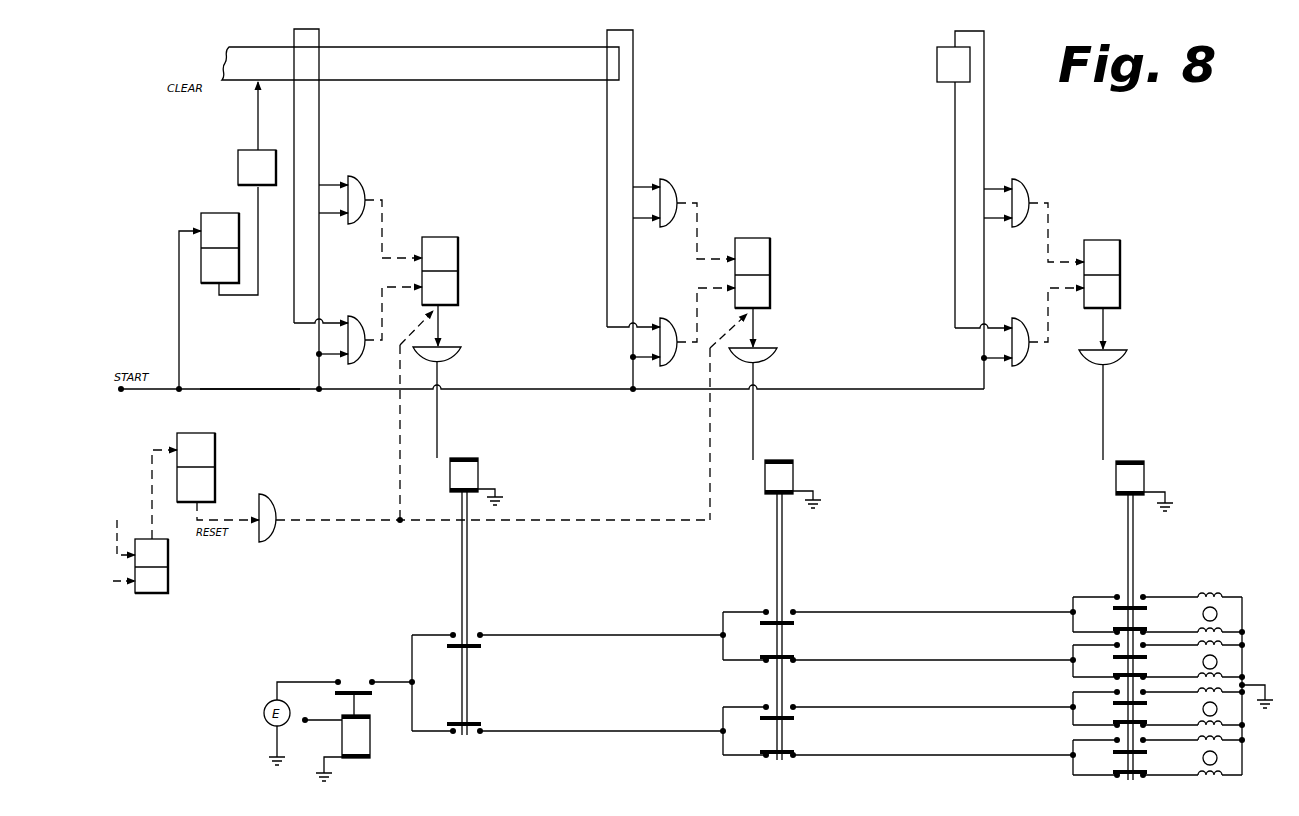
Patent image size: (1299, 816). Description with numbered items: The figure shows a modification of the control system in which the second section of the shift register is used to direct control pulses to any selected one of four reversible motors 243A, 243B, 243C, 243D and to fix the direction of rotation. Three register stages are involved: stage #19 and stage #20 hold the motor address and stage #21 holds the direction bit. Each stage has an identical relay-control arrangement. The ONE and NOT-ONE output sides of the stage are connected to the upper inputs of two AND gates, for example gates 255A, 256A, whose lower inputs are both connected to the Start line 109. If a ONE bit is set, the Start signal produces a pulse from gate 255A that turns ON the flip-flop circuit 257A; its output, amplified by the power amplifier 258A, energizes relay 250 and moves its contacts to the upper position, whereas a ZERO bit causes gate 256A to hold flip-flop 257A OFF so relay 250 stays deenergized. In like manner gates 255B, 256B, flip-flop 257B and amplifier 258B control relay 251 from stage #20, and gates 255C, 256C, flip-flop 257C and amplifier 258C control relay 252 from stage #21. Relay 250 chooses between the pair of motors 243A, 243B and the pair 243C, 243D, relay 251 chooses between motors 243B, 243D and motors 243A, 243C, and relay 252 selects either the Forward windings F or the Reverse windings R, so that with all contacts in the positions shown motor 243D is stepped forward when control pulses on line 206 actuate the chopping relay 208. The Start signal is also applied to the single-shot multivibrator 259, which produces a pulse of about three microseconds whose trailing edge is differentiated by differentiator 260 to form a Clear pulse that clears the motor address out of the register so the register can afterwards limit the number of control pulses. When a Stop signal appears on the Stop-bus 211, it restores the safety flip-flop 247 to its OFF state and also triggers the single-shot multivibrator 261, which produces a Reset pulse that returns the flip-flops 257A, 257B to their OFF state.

The stage #19 of the shift register 19 is at (301, 209).
The stage #20 of the shift register 20 is at (614, 209).
The stage #21 of the shift register 21 is at (960, 210).
The Start line 109 is at (274, 387).
The line 206 is at (330, 752).
The chopping relay 208 is at (370, 740).
The Stop-bus 211 is at (123, 522).
The reversible motor 243A is at (1175, 609).
The reversible motor 243B is at (1175, 660).
The reversible motor 243C is at (1176, 708).
The reversible motor 243D is at (1176, 757).
The flip-flop 247 is at (168, 555).
The relay 250 is at (478, 471).
The relay 251 is at (792, 471).
The relay 252 is at (1146, 471).
The AND gate 255A is at (355, 180).
The AND gate 255B is at (668, 180).
The AND gate 255C is at (1017, 180).
The AND gate 256A is at (358, 314).
The AND gate 256B is at (672, 316).
The AND gate 256C is at (1024, 316).
The flip-flop circuit 257A is at (460, 243).
The flip-flop circuit 257B is at (774, 243).
The flip-flop circuit 257C is at (1122, 247).
The power amplifier 258A is at (458, 350).
The power amplifier 258B is at (777, 353).
The power amplifier 258C is at (1128, 356).
The single-shot multivibrator 259 is at (208, 206).
The differentiator 260 is at (236, 150).
The single-shot multivibrator 261 is at (214, 480).